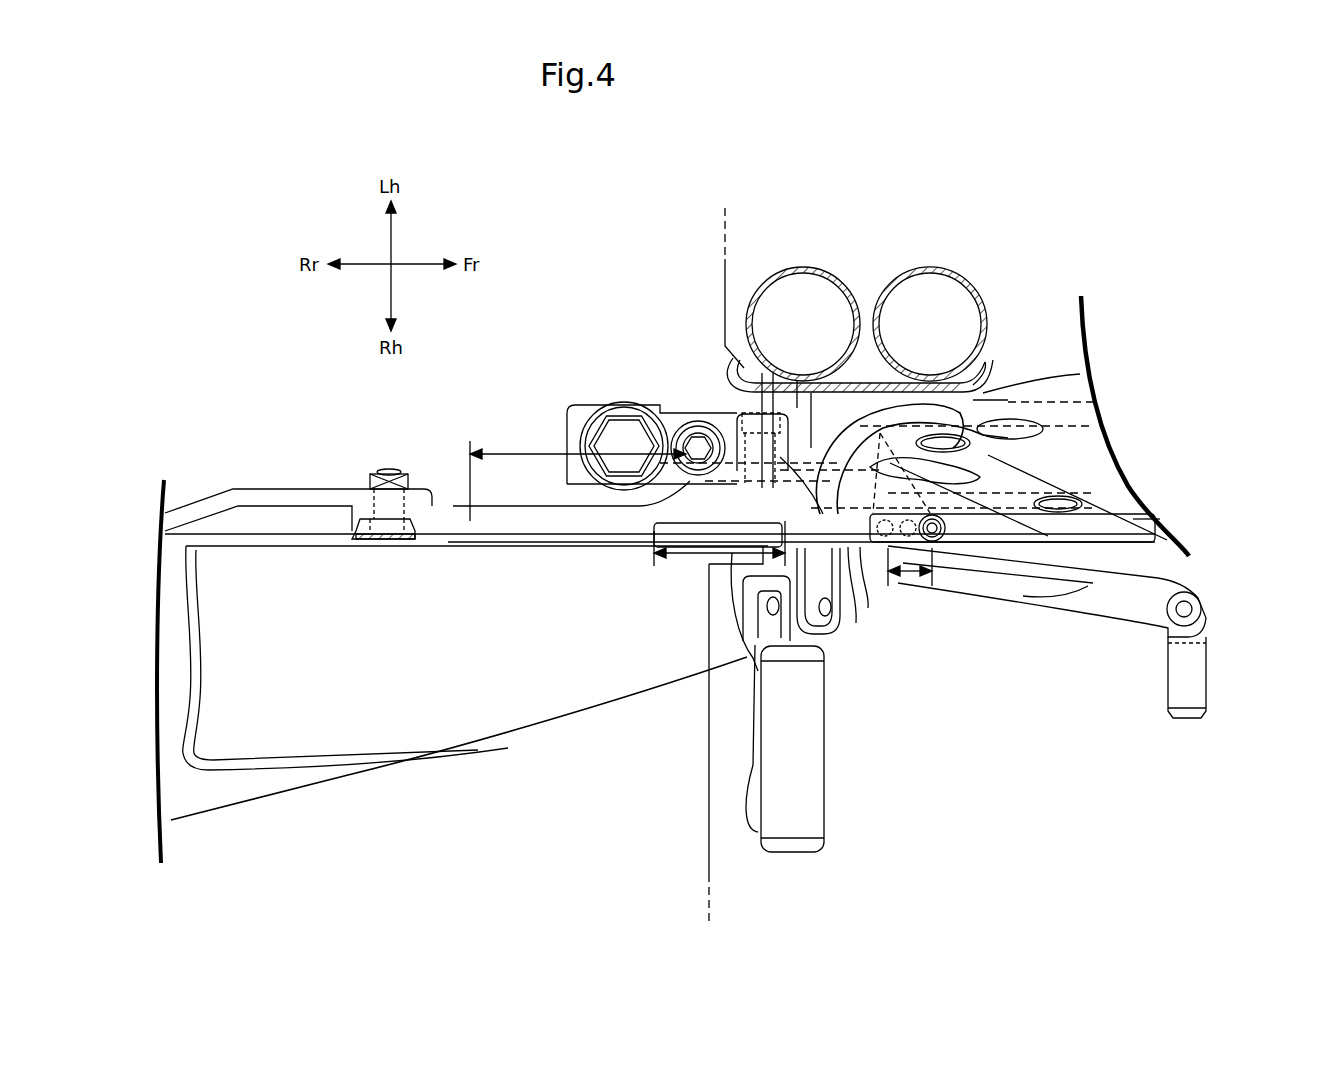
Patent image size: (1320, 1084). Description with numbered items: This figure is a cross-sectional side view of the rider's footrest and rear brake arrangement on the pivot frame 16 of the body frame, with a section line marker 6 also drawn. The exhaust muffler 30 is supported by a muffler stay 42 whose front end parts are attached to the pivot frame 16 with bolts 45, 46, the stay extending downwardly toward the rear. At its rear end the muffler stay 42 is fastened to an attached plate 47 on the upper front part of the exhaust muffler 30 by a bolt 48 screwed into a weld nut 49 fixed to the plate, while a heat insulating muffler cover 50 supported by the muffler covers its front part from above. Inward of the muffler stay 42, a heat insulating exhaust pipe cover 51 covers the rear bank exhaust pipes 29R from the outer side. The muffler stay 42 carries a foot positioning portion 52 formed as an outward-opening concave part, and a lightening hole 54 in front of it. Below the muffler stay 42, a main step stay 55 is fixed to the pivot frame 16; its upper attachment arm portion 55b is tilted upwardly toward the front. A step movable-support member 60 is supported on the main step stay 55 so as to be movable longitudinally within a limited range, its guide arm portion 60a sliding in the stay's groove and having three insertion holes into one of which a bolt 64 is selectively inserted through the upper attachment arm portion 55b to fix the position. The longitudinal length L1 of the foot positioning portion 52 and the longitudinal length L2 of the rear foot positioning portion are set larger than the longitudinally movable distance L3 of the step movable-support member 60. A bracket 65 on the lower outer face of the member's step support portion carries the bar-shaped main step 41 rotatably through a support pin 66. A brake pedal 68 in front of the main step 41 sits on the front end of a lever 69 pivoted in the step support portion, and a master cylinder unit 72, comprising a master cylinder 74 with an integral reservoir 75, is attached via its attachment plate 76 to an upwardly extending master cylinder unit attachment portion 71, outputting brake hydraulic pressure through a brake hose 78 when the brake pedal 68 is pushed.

The section line of Fig. 6 is at (704, 216).
The pivot frame 16 is at (1132, 497).
The rear bank exhaust pipes 29R is at (897, 262).
The exhaust muffler 30 is at (194, 763).
The main step 41 is at (795, 775).
The muffler stay 42 is at (484, 507).
The bolt 45 is at (999, 420).
The bolt 46 is at (1004, 506).
The attached plate 47 is at (250, 487).
The bolt 48 is at (342, 530).
The weld nut 49 is at (358, 473).
The muffler cover 50 is at (432, 708).
The exhaust pipe cover 51 is at (872, 377).
The foot positioning portion 52 is at (720, 407).
The lightening hole 54 is at (1000, 481).
The main step stay 55 is at (1099, 548).
The upper attachment arm portion 55b is at (1003, 575).
The step movable-support member 60 is at (867, 552).
The guide arm portion 60a is at (838, 575).
The bolt 64 is at (937, 511).
The bracket 65 is at (824, 575).
The support pin 66 is at (765, 605).
The brake pedal 68 is at (1183, 676).
The lever 69 is at (1082, 580).
The master cylinder unit attachment portion 71 is at (803, 385).
The master cylinder unit 72 is at (611, 385).
The master cylinder 74 is at (682, 473).
The reservoir 75 is at (555, 412).
The attachment plate 76 is at (765, 400).
The brake hose 78 is at (958, 357).
The longitudinal length of the foot positioning portion L1 is at (687, 553).
The longitudinal length of the rear foot positioning portion L2 is at (542, 446).
The longitudinally movable distance L3 is at (906, 573).